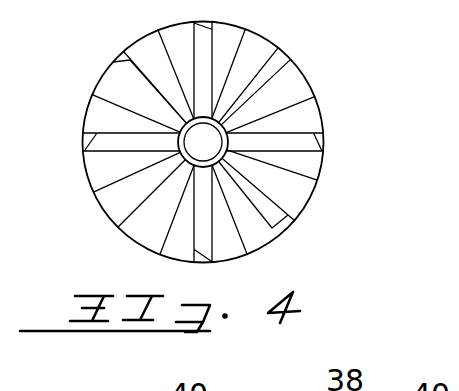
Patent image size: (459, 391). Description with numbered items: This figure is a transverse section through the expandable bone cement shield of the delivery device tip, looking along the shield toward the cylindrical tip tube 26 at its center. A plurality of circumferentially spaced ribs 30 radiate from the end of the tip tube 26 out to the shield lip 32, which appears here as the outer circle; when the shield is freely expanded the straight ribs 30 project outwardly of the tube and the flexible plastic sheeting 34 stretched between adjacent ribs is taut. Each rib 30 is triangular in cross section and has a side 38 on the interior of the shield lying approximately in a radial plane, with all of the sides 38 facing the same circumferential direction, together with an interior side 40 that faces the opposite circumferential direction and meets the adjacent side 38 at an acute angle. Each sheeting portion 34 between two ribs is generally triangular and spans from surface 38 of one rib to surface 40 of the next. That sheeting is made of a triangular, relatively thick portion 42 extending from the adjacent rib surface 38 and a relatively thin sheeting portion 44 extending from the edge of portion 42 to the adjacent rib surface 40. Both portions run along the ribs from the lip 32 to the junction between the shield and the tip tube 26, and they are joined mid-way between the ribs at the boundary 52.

The tip tube 26 is at (181, 122).
The ribs 30 is at (210, 16).
The shield lip 32 is at (323, 164).
The flexible plastic sheeting 34 is at (141, 35).
The rib side 38 is at (140, 190).
The interior rib side 40 is at (131, 219).
The thick sheeting portion 42 is at (230, 44).
The thin sheeting portion 44 is at (252, 57).
The boundary 52 is at (236, 240).